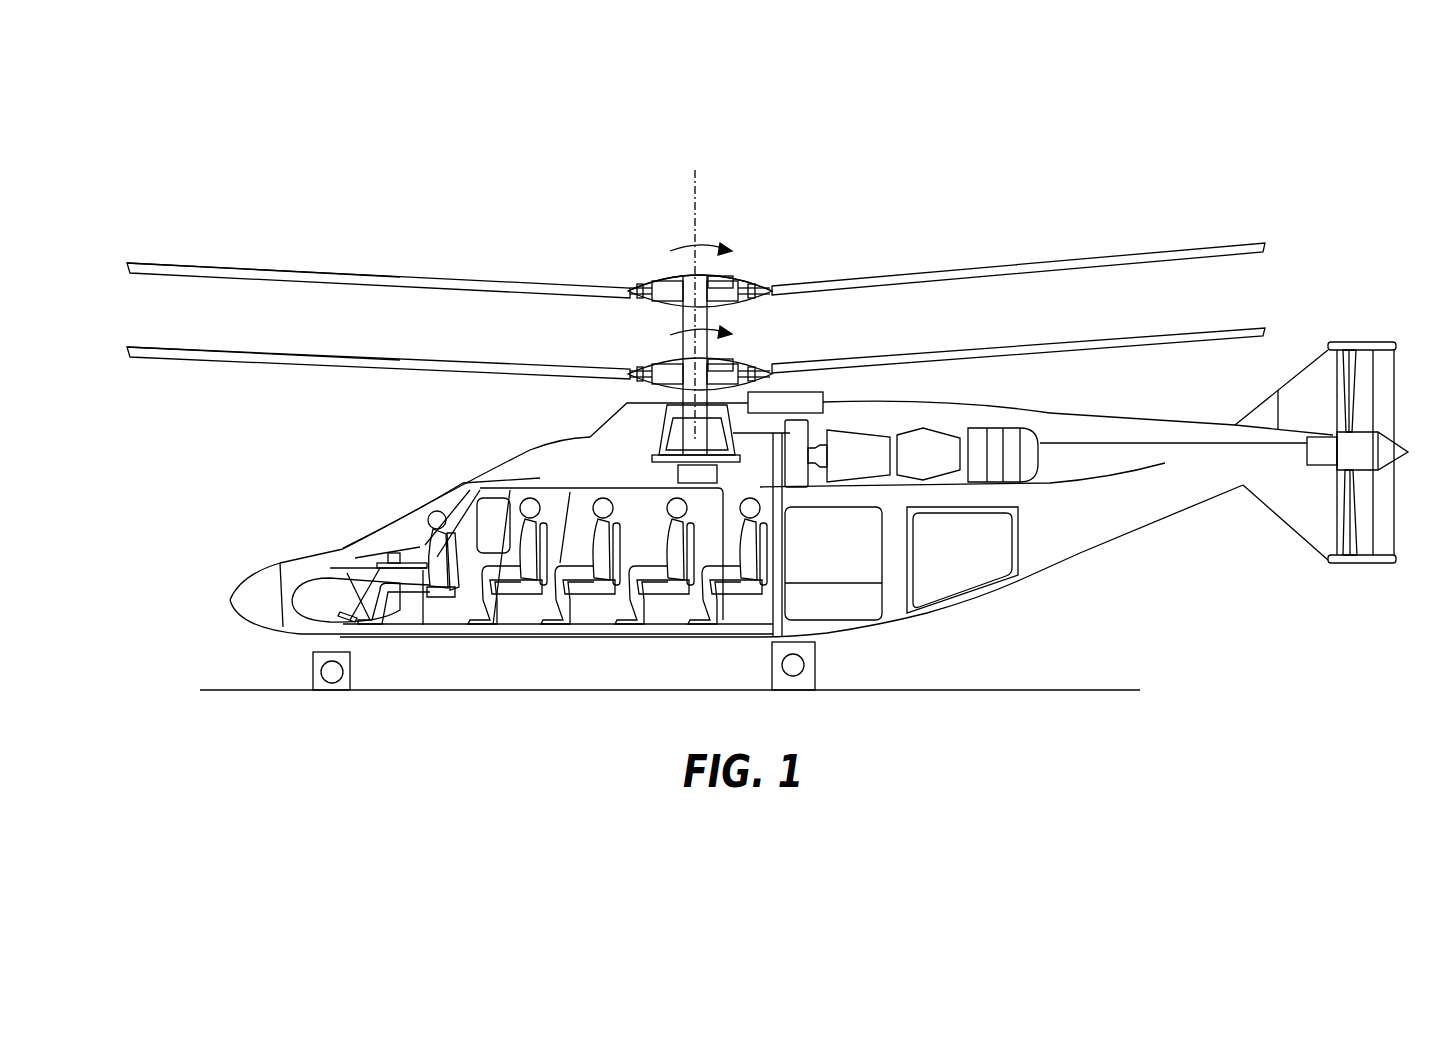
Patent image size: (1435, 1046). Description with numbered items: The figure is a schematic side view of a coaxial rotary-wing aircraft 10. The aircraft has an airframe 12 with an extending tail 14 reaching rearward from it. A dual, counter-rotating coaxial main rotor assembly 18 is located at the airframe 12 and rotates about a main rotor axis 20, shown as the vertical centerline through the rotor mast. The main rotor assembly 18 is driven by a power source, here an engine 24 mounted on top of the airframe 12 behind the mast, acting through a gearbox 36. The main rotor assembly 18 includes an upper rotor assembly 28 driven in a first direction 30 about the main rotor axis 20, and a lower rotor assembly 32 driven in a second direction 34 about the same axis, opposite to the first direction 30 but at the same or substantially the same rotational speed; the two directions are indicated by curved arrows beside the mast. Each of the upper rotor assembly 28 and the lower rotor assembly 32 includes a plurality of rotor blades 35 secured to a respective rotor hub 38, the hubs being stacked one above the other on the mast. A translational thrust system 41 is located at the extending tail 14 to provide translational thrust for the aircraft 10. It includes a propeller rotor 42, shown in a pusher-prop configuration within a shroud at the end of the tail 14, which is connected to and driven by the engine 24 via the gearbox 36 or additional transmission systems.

The rotary-wing aircraft 10 is at (283, 190).
The airframe 12 is at (518, 632).
The extending tail 14 is at (1063, 562).
The main rotor assembly 18 is at (636, 252).
The main rotor axis 20 is at (693, 198).
The engine 24 is at (945, 445).
The upper rotor assembly 28 is at (918, 275).
The first direction 30 is at (704, 240).
The lower rotor assembly 32 is at (1112, 340).
The second direction 34 is at (677, 336).
The rotor blades 35 is at (345, 278).
The gearbox 36 is at (705, 312).
The rotor hub 38 is at (748, 302).
The translational thrust system 41 is at (1365, 342).
The propeller rotor 42 is at (1352, 480).